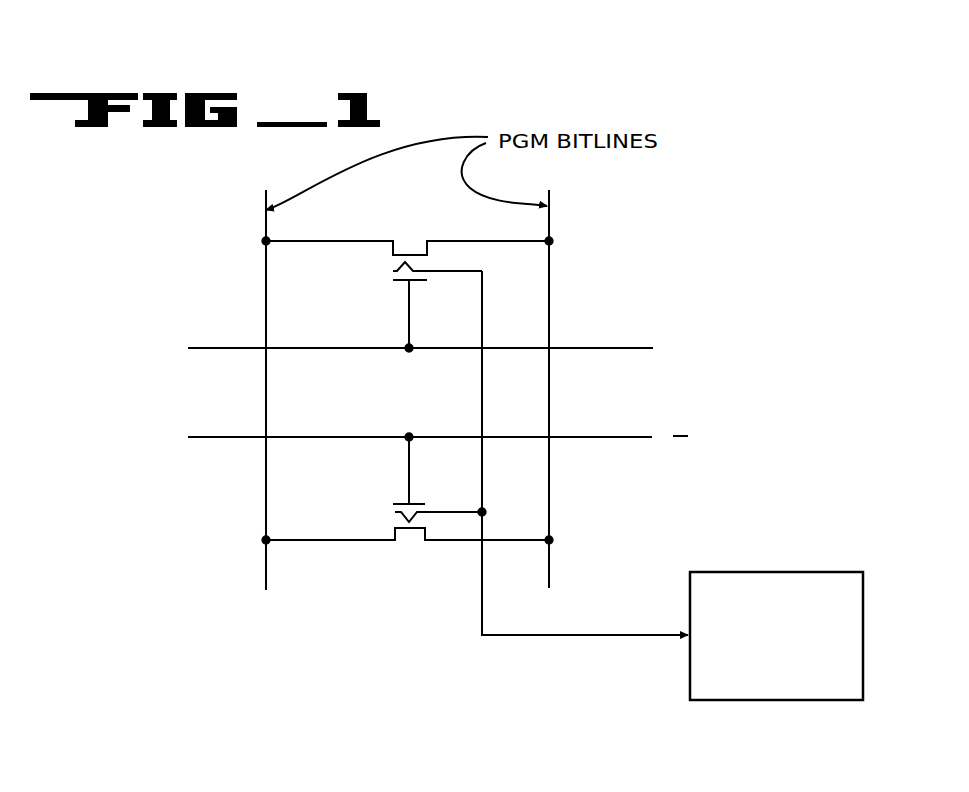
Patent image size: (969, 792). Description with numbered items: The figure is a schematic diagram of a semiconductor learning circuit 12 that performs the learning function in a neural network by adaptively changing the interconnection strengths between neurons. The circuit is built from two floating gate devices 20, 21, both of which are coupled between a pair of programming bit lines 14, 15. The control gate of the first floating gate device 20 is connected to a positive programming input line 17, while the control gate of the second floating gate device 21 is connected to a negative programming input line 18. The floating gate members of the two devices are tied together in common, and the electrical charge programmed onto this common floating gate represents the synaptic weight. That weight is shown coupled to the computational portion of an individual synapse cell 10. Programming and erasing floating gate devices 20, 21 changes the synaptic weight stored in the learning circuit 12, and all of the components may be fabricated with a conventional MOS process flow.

The synapse cell 10 is at (792, 681).
The semiconductor learning circuit 12 is at (151, 233).
The programming bit line 14 is at (264, 279).
The programming bit line 15 is at (551, 302).
The positive programming input line 17 is at (207, 345).
The negative programming input line 18 is at (207, 434).
The floating gate device 20 is at (389, 278).
The floating gate device 21 is at (390, 506).